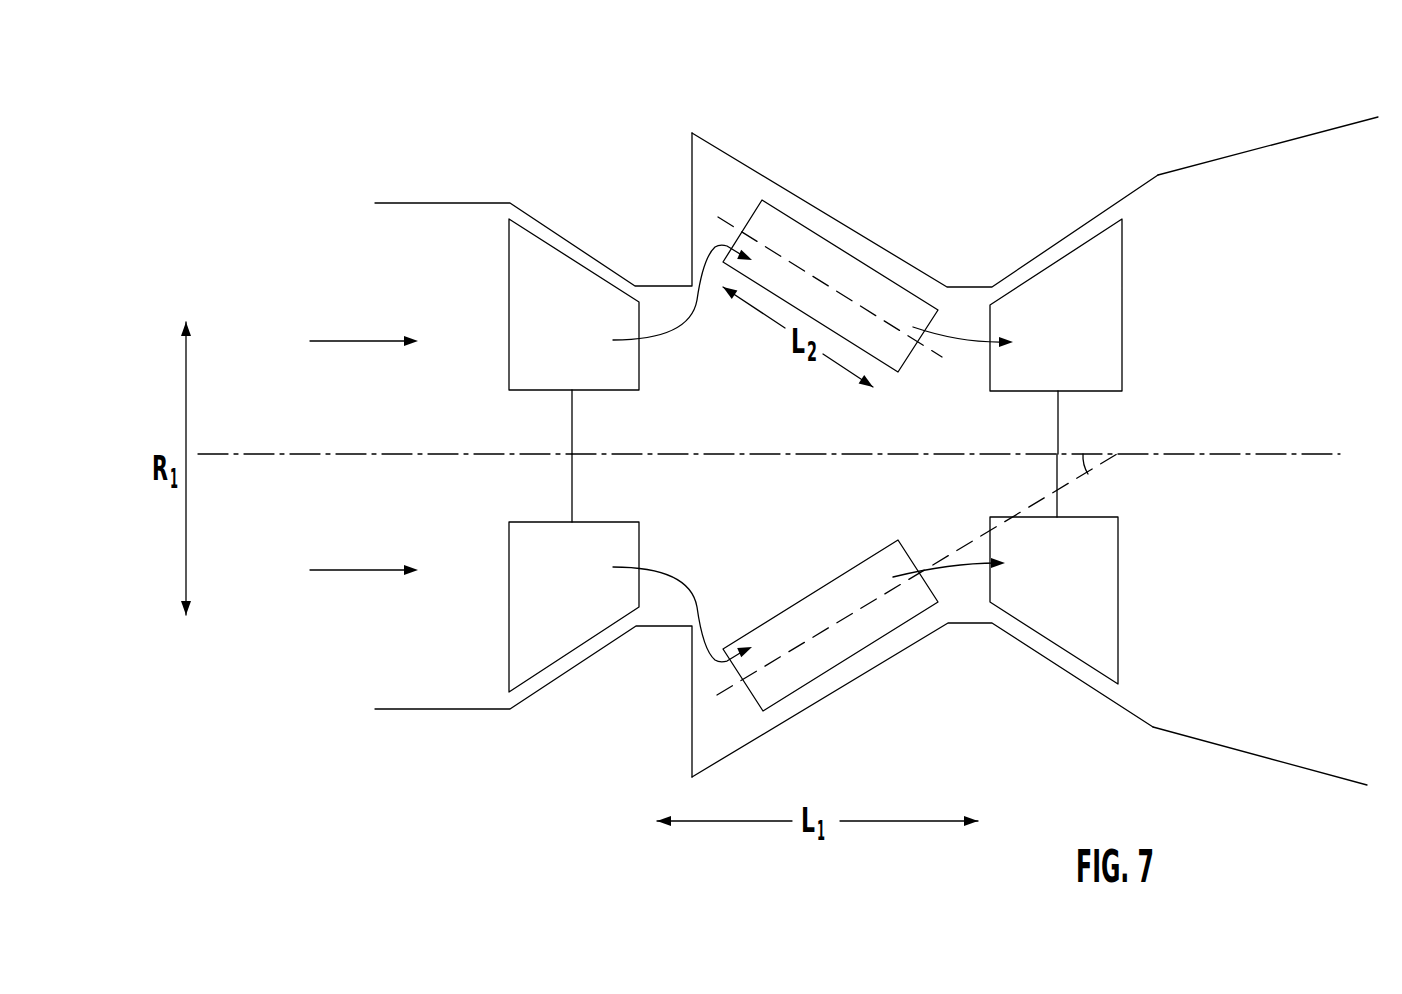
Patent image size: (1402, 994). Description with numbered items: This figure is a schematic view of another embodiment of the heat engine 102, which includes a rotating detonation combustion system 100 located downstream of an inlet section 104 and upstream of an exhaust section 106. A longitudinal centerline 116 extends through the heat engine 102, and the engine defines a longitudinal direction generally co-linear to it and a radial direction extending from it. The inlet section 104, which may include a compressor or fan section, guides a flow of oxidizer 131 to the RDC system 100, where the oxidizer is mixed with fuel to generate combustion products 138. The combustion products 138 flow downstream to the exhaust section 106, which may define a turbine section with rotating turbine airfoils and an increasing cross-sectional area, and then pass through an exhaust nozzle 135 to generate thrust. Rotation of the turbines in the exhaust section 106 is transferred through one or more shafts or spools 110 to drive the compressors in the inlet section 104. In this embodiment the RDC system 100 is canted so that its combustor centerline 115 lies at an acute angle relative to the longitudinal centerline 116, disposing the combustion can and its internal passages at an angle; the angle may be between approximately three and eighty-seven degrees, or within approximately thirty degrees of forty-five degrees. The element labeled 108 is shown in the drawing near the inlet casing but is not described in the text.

The rotating detonation combustion system 100 is at (872, 568).
The heat engine 102 is at (962, 172).
The inlet section 104 is at (562, 273).
The exhaust section 106 is at (1103, 305).
The inlet casing 108 is at (473, 237).
The shaft or spool 110 is at (693, 456).
The combustor centerline 115 is at (725, 220).
The longitudinal centerline 116 is at (1168, 452).
The flow of oxidizer 131 is at (361, 341).
The exhaust nozzle 135 is at (1272, 115).
The combustion products 138 is at (963, 343).